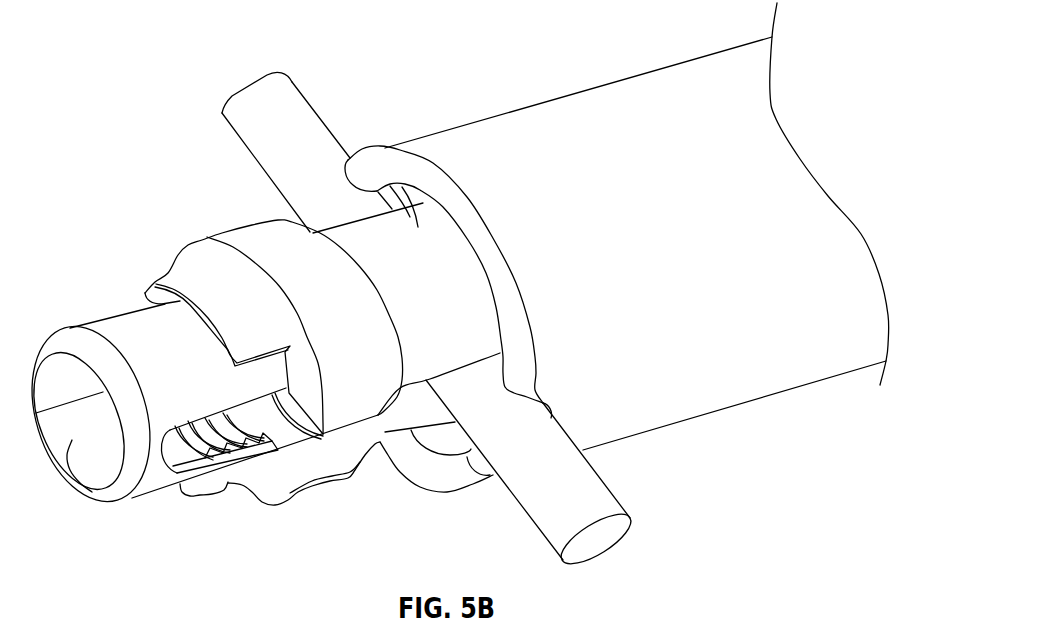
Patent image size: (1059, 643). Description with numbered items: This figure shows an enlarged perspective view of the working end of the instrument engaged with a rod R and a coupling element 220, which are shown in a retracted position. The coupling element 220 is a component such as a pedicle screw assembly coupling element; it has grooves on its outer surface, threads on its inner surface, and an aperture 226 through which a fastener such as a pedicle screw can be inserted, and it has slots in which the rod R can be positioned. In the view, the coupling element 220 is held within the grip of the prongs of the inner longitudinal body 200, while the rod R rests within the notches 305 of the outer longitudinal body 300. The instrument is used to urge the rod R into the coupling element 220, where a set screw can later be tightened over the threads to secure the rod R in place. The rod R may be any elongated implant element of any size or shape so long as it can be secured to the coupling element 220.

The inner longitudinal body 200 is at (418, 227).
The coupling element 220 is at (113, 333).
The aperture 226 is at (99, 500).
The outer longitudinal body 300 is at (766, 39).
The notches 305 is at (549, 406).
The rod R is at (288, 93).